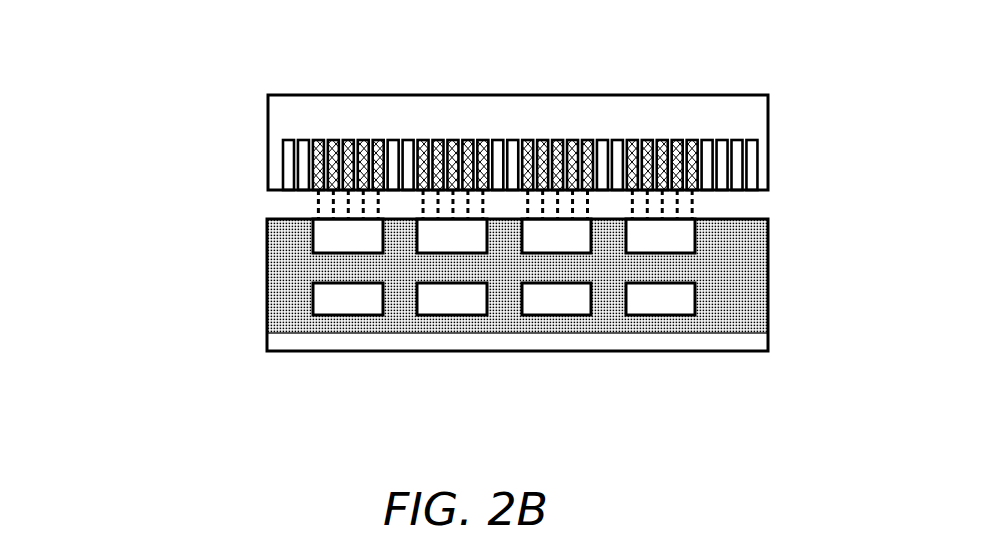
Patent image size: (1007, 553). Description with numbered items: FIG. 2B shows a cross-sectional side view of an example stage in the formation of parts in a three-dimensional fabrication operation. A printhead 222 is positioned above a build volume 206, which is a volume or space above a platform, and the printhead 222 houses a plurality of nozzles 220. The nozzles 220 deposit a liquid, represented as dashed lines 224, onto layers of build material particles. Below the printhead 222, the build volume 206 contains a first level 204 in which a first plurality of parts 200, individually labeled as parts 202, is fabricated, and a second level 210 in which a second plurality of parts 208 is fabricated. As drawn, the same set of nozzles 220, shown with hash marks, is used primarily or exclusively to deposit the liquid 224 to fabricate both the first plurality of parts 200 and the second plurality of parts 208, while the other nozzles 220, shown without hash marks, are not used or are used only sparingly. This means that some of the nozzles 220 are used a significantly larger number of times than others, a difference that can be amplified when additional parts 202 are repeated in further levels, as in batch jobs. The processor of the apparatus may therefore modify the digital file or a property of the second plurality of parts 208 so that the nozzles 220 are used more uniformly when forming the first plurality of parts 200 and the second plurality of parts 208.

The first plurality of parts 200 is at (412, 324).
The part 202 is at (697, 226).
The first level 204 is at (268, 317).
The build volume 206 is at (799, 316).
The second plurality of parts 208 is at (292, 255).
The second level 210 is at (267, 240).
The nozzles 220 is at (282, 164).
The printhead 222 is at (300, 95).
The liquid 224 is at (588, 204).